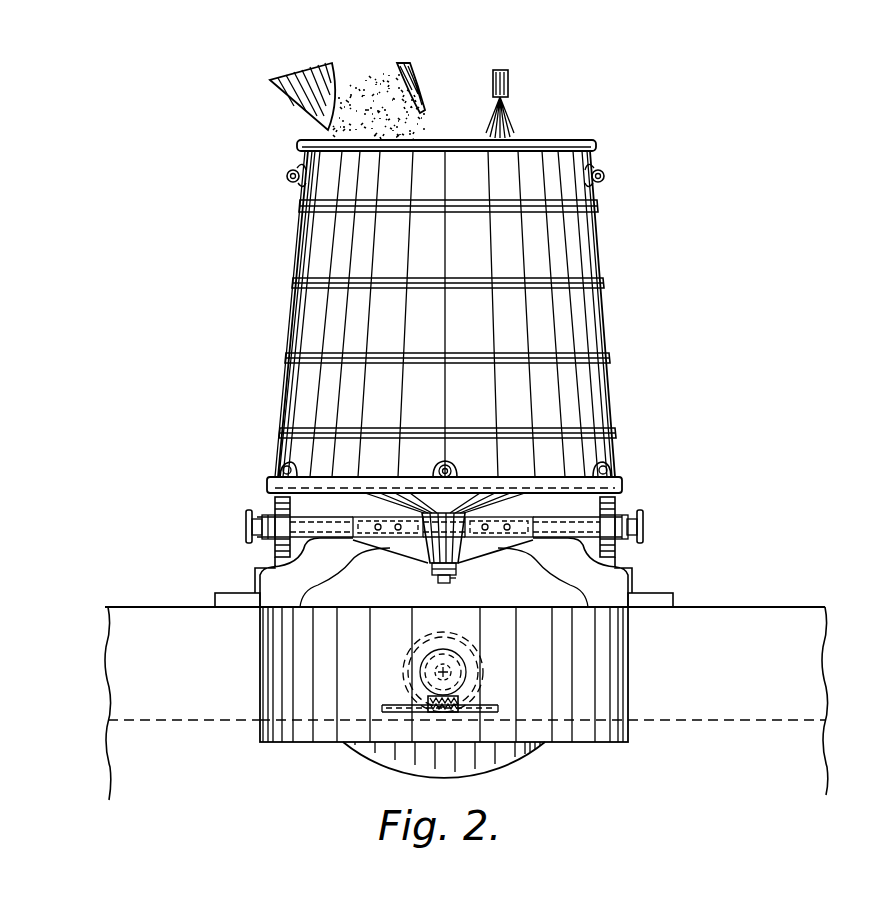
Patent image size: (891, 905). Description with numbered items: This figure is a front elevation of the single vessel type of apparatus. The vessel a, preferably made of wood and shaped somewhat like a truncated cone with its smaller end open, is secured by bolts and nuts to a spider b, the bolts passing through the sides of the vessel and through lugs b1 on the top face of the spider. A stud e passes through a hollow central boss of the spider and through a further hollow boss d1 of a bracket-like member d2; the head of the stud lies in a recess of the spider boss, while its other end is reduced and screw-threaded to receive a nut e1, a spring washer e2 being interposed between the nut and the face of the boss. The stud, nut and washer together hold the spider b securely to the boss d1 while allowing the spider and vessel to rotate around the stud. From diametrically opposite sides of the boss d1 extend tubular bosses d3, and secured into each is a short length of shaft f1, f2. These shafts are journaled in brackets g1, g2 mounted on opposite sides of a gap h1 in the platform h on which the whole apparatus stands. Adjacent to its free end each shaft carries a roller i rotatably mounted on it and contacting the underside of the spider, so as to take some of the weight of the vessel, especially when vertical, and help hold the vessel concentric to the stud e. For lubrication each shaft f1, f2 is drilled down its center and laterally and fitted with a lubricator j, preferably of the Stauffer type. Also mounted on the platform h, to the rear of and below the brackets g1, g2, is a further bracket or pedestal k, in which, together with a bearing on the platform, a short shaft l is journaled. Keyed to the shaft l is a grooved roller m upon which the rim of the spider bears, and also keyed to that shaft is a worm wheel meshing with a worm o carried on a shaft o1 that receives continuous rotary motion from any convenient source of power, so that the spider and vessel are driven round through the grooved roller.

The vessel a is at (445, 308).
The spider b is at (508, 480).
The lugs b1 is at (430, 470).
The hollow boss d1 is at (440, 546).
The bracket-like member d2 is at (478, 546).
The tubular bosses d3 is at (390, 540).
The stud e is at (449, 583).
The nut e1 is at (458, 577).
The spring washer e2 is at (430, 572).
The shaft f1 is at (268, 518).
The shaft f2 is at (620, 518).
The bracket g1 is at (236, 575).
The bracket g2 is at (640, 590).
The platform h is at (466, 703).
The gap h1 is at (278, 697).
The roller i is at (277, 503).
The lubricator j is at (245, 527).
The bracket or pedestal k is at (468, 698).
The short shaft l is at (448, 672).
The grooved roller m is at (408, 650).
The worm o is at (455, 744).
The shaft o1 is at (388, 705).